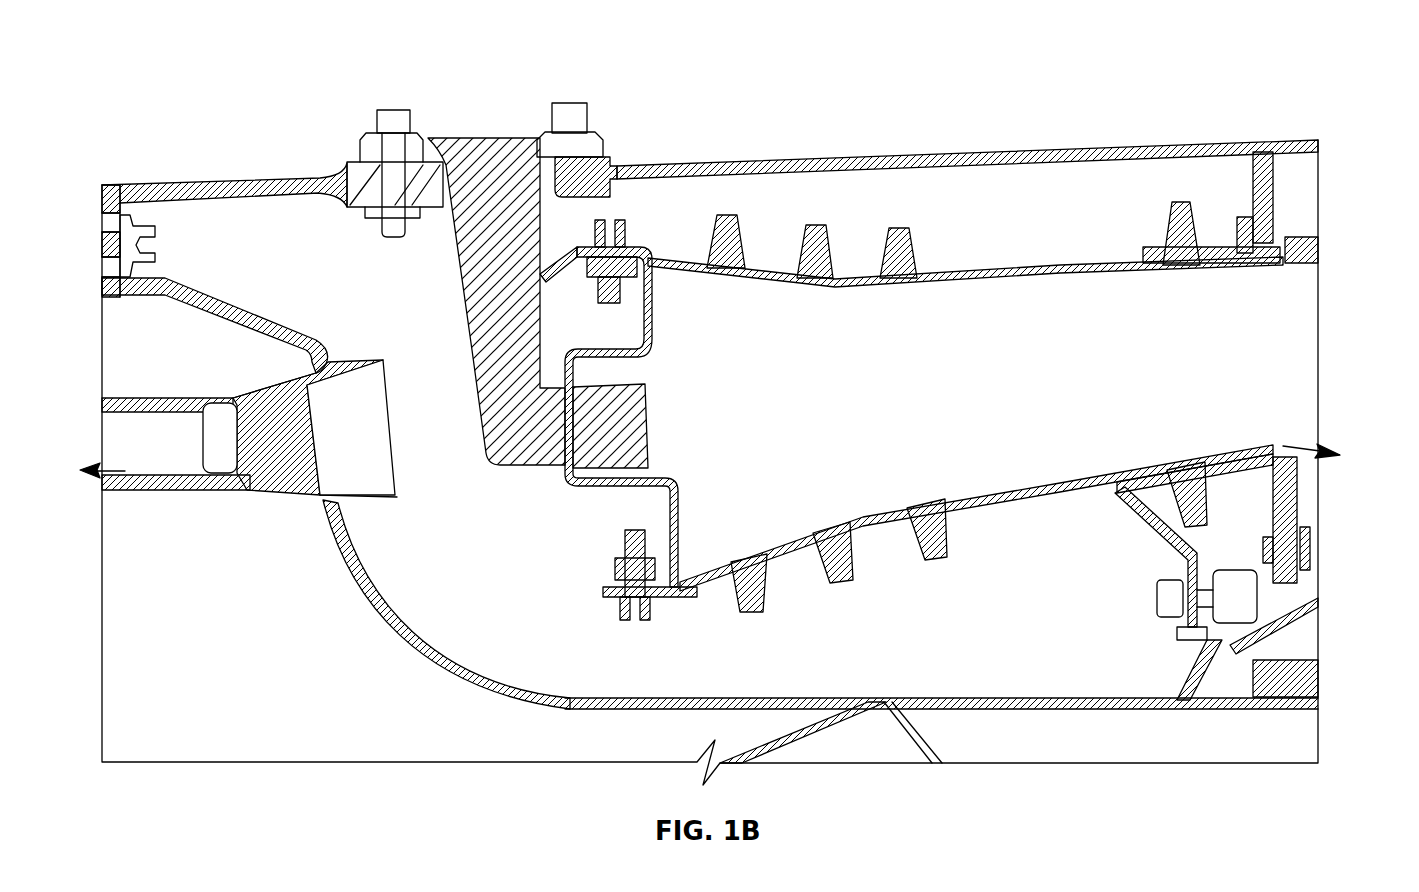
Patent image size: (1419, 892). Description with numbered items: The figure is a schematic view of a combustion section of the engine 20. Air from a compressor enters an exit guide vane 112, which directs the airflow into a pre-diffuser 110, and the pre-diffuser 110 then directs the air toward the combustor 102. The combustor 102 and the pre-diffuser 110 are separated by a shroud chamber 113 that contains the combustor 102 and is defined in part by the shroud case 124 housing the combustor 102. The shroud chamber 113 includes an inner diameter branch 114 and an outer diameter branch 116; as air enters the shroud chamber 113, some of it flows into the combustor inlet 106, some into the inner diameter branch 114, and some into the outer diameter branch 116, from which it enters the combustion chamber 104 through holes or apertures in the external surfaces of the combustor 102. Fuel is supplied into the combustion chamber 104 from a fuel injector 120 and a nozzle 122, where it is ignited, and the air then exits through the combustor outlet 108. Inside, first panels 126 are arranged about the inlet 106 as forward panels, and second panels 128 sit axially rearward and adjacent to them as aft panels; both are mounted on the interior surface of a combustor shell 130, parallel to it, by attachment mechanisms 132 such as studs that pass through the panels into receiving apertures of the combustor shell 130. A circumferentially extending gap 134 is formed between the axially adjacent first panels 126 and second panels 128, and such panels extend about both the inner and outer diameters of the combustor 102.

The engine 20 is at (168, 58).
The combustor 102 is at (1085, 252).
The combustion chamber 104 is at (891, 421).
The inlet 106 is at (455, 407).
The outlet 108 is at (1297, 318).
The pre-diffuser 110 is at (280, 480).
The exit guide vane 112 is at (185, 428).
The shroud chamber 113 is at (452, 554).
The inner diameter branch 114 is at (733, 651).
The outer diameter branch 116 is at (705, 224).
The fuel injector 120 is at (487, 165).
The nozzle 122 is at (647, 425).
The shroud case 124 is at (905, 160).
The first panels 126 is at (730, 268).
The second panels 128 is at (962, 278).
The combustor shell 130 is at (773, 268).
The attachment mechanisms 132 is at (815, 245).
The gap 134 is at (857, 286).